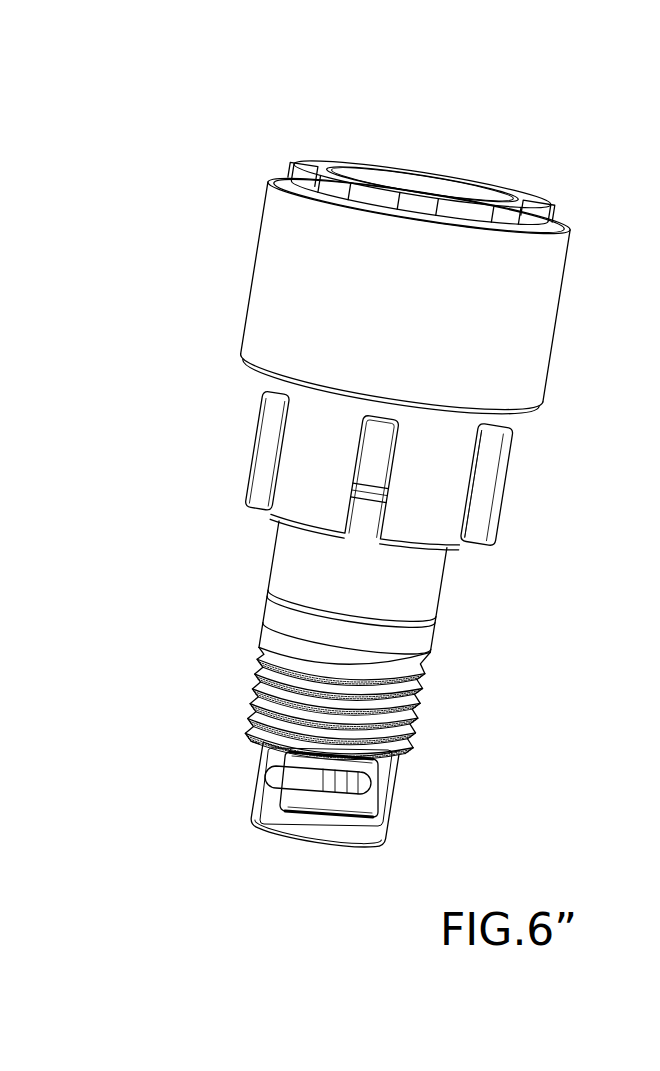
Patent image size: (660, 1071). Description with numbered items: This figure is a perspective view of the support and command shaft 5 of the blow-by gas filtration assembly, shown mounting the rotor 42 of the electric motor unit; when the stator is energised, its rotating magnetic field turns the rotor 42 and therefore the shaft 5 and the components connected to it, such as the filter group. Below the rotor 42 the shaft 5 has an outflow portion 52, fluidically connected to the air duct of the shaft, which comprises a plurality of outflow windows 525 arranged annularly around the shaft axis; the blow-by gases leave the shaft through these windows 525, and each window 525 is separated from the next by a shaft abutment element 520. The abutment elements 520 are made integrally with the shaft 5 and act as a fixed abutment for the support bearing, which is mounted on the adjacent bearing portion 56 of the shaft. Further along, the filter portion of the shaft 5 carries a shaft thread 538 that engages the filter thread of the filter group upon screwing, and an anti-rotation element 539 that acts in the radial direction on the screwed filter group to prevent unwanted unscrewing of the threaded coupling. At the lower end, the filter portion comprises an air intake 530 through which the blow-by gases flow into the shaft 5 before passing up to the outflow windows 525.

The support and command shaft 5 is at (361, 492).
The rotor 42 is at (325, 285).
The outflow portion 52 is at (230, 453).
The shaft abutment element 520 is at (317, 442).
The outflow window 525 is at (381, 483).
The bearing portion 56 is at (257, 552).
The shaft thread 538 is at (257, 688).
The anti-rotation element 539 is at (376, 793).
The air intake 530 is at (311, 855).